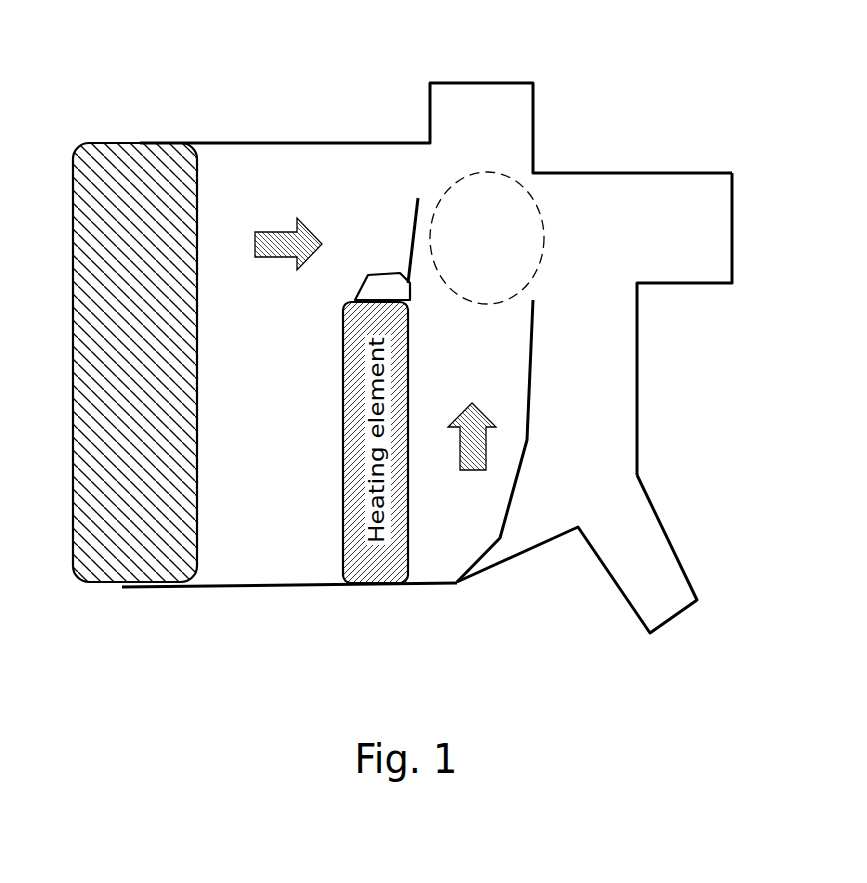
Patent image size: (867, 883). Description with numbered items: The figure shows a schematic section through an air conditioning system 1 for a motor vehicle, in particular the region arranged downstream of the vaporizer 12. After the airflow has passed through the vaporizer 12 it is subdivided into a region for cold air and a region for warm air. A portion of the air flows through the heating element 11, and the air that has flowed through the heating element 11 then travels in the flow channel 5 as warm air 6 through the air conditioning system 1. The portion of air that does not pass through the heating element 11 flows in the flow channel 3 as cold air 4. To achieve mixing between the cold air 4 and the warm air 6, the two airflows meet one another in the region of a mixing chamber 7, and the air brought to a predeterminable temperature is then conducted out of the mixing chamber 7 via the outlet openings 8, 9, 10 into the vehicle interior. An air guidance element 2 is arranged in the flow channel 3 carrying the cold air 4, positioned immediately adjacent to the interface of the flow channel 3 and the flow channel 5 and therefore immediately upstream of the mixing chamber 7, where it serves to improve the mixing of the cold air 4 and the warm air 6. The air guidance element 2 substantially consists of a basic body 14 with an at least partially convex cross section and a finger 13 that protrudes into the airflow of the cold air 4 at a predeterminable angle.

The air conditioning system 1 is at (232, 604).
The air guidance element 2 is at (398, 253).
The flow channel 3 is at (338, 247).
The cold air 4 is at (270, 243).
The flow channel 5 is at (435, 450).
The warm air 6 is at (468, 480).
The mixing chamber 7 is at (477, 202).
The outlet opening 8 is at (535, 128).
The outlet opening 9 is at (732, 238).
The outlet opening 10 is at (665, 535).
The heating element 11 is at (370, 563).
The vaporizer 12 is at (123, 547).
The finger 13 is at (415, 213).
The basic body 14 is at (371, 292).